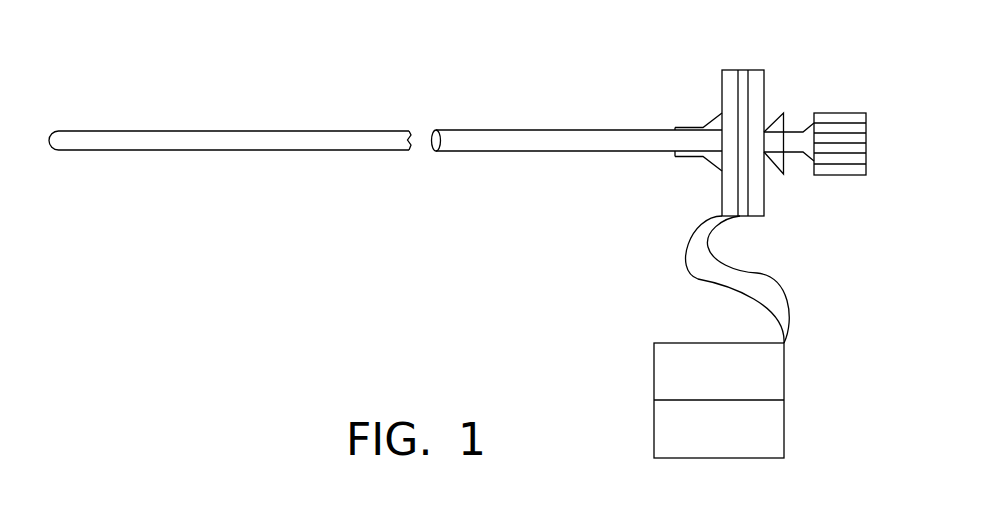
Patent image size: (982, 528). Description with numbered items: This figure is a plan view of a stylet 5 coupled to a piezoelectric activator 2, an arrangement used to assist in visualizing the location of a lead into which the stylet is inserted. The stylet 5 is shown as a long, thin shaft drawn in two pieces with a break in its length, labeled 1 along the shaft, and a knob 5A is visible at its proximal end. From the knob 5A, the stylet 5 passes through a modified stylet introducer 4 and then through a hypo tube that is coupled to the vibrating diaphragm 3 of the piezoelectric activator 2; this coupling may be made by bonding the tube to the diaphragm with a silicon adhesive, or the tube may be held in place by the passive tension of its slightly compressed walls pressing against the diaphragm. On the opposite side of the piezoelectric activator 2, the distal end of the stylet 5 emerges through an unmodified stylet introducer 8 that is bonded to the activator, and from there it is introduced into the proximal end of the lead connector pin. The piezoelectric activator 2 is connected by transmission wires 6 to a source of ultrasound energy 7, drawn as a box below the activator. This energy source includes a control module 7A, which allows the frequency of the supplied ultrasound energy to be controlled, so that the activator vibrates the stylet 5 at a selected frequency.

The elongated shaft 1 is at (235, 130).
The piezoelectric activator 2 is at (722, 70).
The vibrating diaphragm 3 is at (742, 70).
The modified stylet introducer 4 is at (784, 112).
The stylet 5 is at (798, 153).
The knob 5A is at (842, 113).
The transmission wires 6 is at (718, 262).
The source of ultrasound energy 7 is at (784, 372).
The control module 7A is at (784, 428).
The unmodified stylet introducer 8 is at (711, 160).